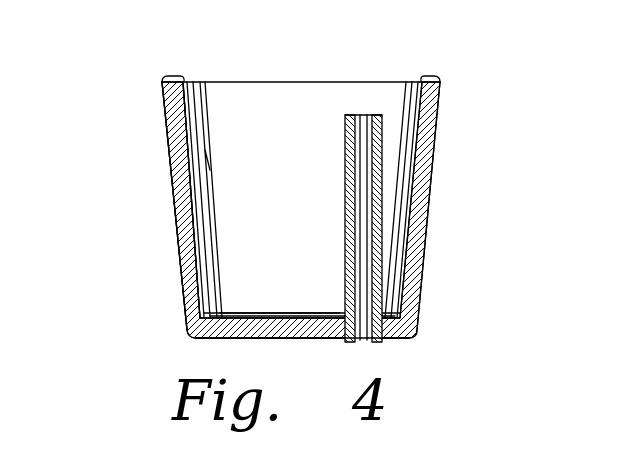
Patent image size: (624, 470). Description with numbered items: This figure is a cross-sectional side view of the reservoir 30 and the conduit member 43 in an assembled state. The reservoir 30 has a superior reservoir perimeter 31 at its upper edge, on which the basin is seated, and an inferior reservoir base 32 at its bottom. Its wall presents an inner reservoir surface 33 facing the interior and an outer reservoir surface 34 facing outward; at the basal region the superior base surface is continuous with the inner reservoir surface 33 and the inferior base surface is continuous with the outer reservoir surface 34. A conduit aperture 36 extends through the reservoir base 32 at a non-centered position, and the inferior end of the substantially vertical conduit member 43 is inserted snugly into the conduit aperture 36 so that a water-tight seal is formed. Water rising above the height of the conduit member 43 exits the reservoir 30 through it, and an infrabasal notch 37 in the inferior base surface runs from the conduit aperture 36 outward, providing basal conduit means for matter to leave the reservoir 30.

The reservoir 30 is at (428, 214).
The superior reservoir perimeter 31 is at (168, 80).
The inferior reservoir base 32 is at (268, 317).
The inner reservoir surface 33 is at (192, 150).
The outer reservoir surface 34 is at (177, 210).
The conduit aperture 36 is at (365, 340).
The infrabasal notch 37 is at (417, 339).
The conduit member 43 is at (382, 147).